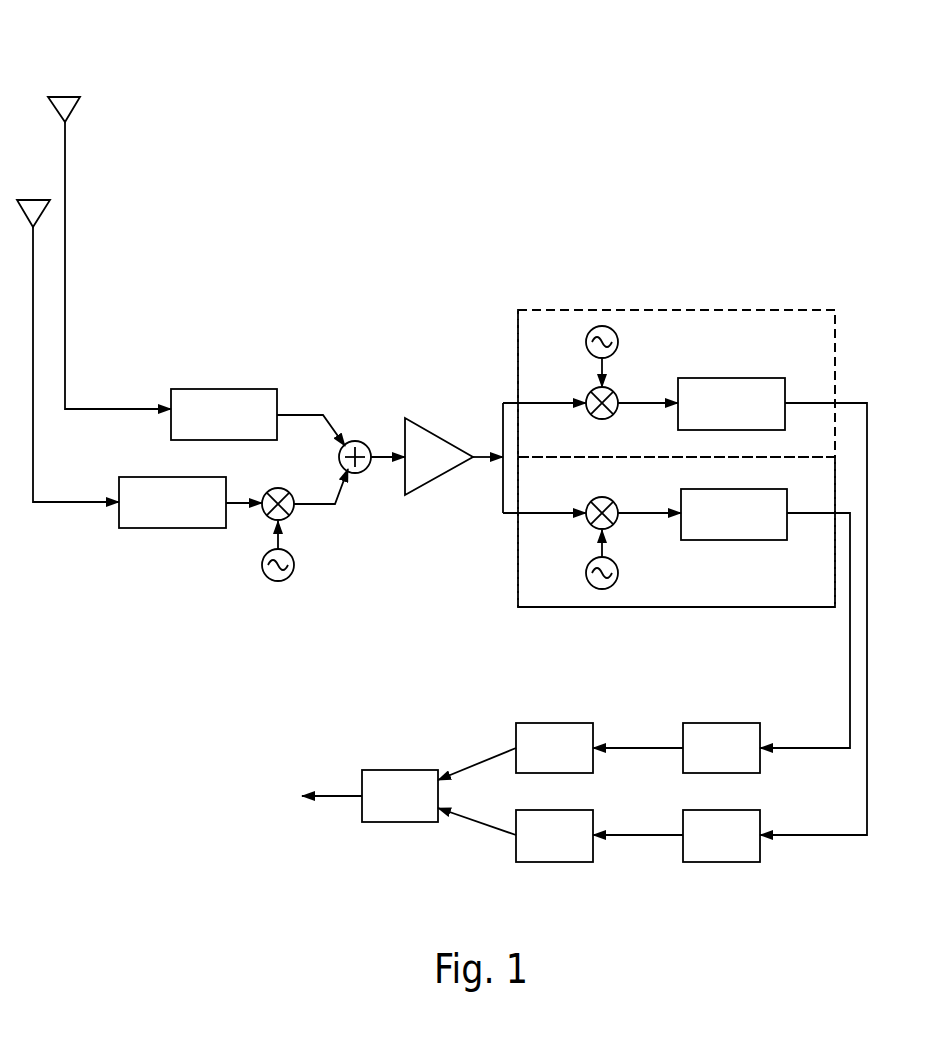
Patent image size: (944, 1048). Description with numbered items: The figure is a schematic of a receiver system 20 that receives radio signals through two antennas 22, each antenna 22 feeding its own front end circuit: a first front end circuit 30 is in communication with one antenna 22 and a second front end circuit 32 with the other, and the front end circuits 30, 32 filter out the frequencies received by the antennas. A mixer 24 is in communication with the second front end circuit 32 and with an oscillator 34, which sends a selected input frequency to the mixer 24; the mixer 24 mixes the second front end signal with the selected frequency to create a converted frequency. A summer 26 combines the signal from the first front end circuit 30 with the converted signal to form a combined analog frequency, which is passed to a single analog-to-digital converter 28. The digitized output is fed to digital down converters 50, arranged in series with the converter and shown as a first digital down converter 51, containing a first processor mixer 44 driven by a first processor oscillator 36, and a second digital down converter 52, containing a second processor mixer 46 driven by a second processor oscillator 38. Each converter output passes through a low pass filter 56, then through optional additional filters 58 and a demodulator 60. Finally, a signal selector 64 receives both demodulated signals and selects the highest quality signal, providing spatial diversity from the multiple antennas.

The system 20 is at (456, 180).
The antenna 22 is at (33, 203).
The mixer 24 is at (280, 489).
The summer 26 is at (355, 441).
The analog-to-digital converter 28 is at (422, 441).
The first front end circuit 30 is at (258, 417).
The second front end circuit 32 is at (190, 502).
The oscillator 34 is at (262, 567).
The first processor oscillator 36 is at (618, 342).
The second processor oscillator 38 is at (586, 574).
The first processor mixer 44 is at (606, 417).
The second processor mixer 46 is at (603, 497).
The digital down converters 50 is at (691, 307).
The first digital down converter 51 is at (551, 318).
The second digital down converter 52 is at (775, 597).
The low pass filter 56 is at (748, 378).
The additional filters 58 is at (676, 792).
The demodulator 60 is at (515, 792).
The signal selector 64 is at (370, 796).